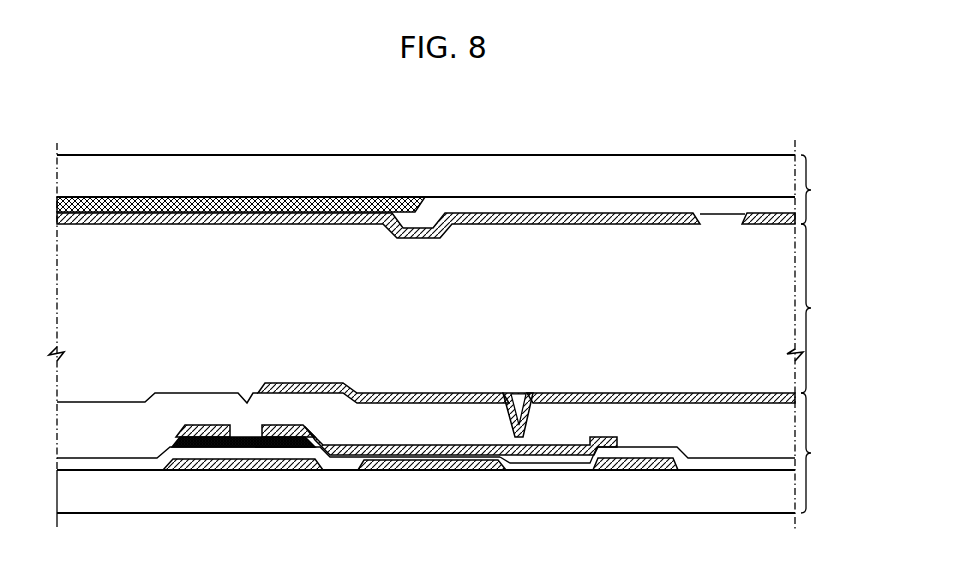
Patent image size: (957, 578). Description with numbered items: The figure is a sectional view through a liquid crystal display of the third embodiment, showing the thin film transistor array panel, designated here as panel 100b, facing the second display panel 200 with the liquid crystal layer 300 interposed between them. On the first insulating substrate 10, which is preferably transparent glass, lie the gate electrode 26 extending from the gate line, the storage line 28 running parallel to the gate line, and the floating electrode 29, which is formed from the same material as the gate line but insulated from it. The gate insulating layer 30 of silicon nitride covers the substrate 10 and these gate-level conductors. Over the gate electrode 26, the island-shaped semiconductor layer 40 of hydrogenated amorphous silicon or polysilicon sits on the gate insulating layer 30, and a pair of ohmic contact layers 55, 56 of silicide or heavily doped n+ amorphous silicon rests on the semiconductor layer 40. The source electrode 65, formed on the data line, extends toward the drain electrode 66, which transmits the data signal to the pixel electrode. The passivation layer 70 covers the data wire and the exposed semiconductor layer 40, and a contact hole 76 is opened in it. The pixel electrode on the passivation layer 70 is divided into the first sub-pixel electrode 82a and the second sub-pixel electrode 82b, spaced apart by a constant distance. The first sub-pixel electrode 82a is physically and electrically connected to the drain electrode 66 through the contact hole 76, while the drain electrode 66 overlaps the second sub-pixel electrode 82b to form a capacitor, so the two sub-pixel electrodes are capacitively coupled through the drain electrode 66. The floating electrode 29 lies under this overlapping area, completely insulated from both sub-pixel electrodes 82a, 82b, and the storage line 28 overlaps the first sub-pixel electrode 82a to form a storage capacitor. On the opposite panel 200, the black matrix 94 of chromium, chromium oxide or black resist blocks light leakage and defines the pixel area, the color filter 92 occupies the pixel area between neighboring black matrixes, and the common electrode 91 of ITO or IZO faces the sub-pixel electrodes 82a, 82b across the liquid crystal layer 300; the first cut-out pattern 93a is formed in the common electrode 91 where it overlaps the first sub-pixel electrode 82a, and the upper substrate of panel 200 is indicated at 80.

The first insulating substrate 10 is at (752, 483).
The gate electrode 26 is at (302, 466).
The storage line 28 is at (627, 473).
The floating electrode 29 is at (456, 468).
The gate insulating layer 30 is at (515, 462).
The semiconductor layer 40 is at (186, 447).
The ohmic contact layer 55 is at (218, 447).
The ohmic contact layer 56 is at (273, 448).
The source electrode 65 is at (200, 447).
The drain electrode 66 is at (287, 447).
The passivation layer 70 is at (713, 447).
The contact hole 76 is at (523, 384).
The upper substrate 80 is at (765, 185).
The first sub-pixel electrode 82a is at (557, 405).
The second sub-pixel electrode 82b is at (378, 402).
The common electrode 91 is at (557, 213).
The color filter 92 is at (473, 207).
The first cut-out pattern 93a is at (728, 217).
The black matrix 94 is at (345, 197).
The lower panel 100b is at (832, 453).
The second display panel 200 is at (824, 189).
The liquid crystal layer 300 is at (825, 308).